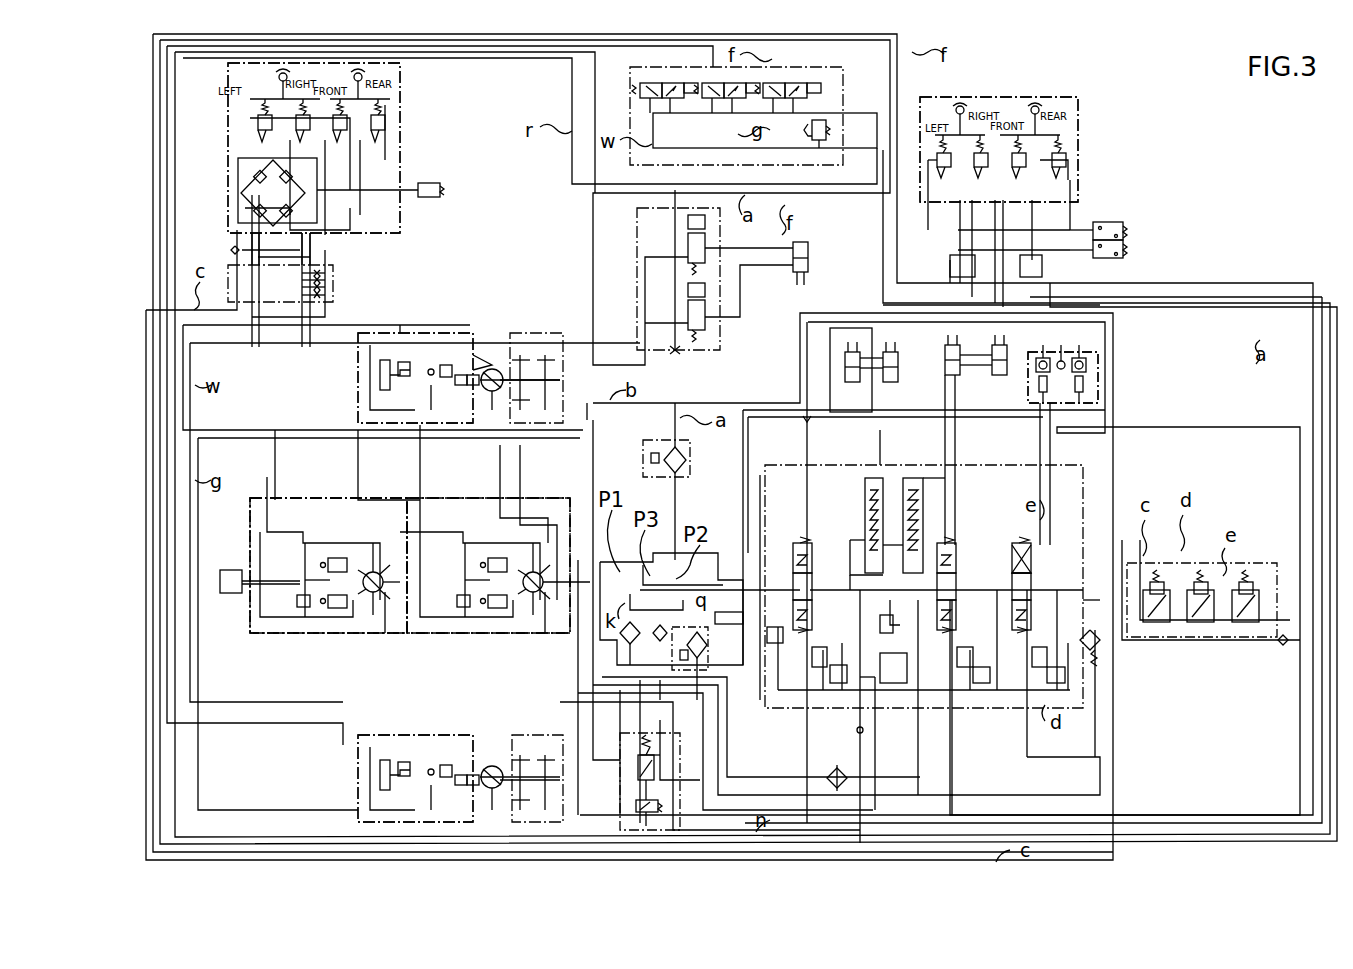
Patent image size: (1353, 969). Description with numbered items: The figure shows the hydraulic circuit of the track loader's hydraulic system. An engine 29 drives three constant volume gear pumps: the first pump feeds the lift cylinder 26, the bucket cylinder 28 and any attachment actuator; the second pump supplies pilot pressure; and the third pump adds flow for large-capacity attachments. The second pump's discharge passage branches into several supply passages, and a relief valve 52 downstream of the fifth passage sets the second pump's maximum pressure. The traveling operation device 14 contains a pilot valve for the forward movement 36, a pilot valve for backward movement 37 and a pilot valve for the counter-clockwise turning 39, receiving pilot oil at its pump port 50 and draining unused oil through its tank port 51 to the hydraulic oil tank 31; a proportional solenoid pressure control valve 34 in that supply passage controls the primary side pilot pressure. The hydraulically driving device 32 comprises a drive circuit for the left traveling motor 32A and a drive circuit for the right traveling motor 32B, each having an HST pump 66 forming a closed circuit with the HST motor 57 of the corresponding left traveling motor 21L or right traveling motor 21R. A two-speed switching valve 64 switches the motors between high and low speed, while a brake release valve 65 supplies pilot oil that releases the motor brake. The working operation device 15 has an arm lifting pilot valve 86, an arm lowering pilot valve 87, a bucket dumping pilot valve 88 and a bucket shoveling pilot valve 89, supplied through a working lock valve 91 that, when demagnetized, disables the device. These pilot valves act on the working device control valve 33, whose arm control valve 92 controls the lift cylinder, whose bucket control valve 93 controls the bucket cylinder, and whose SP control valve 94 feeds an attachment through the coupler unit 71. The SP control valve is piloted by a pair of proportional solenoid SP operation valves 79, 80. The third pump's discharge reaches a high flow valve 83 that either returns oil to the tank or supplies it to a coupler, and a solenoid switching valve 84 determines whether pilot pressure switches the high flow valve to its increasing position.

The traveling operation device 14 is at (359, 148).
The working operation device 15 is at (1056, 148).
The left traveling motor 21L is at (442, 338).
The right traveling motor 21R is at (367, 778).
The lift cylinder 26 is at (853, 380).
The bucket cylinder 28 is at (1000, 343).
The engine 29 is at (230, 593).
The hydraulic oil tank 31 is at (737, 670).
The hydraulically driving device 32 is at (410, 603).
The drive circuit for the left traveling motor 32A is at (325, 633).
The drive circuit for the right traveling motor 32B is at (528, 633).
The working device control valve 33 is at (924, 563).
The pressure control valve 34 is at (1168, 622).
The pilot valve for the forward movement 36 is at (348, 146).
The pilot valve for backward movement 37 is at (415, 107).
The pilot valve for the counter-clockwise turning 39 is at (230, 108).
The pump port 50 is at (234, 238).
The tank port 51 is at (356, 234).
The relief valve 52 is at (821, 145).
The HST motor 57 is at (516, 345).
The two-speed switching valve 64 is at (635, 102).
The brake release valve 65 is at (698, 103).
The HST pump 66 is at (408, 586).
The coupler unit 71 is at (1105, 368).
The SP operation valve 79 is at (1214, 622).
The SP operation valve 80 is at (1258, 622).
The high flow valve 83 is at (635, 778).
The switching valve 84 is at (632, 808).
The arm lifting pilot valve 86 is at (1096, 156).
The arm lowering pilot valve 87 is at (1017, 181).
The bucket dumping pilot valve 88 is at (982, 181).
The bucket shoveling pilot valve 89 is at (927, 201).
The working lock valve 91 is at (810, 82).
The arm control valve 92 is at (791, 558).
The bucket control valve 93 is at (937, 532).
The SP control valve 94 is at (1012, 555).